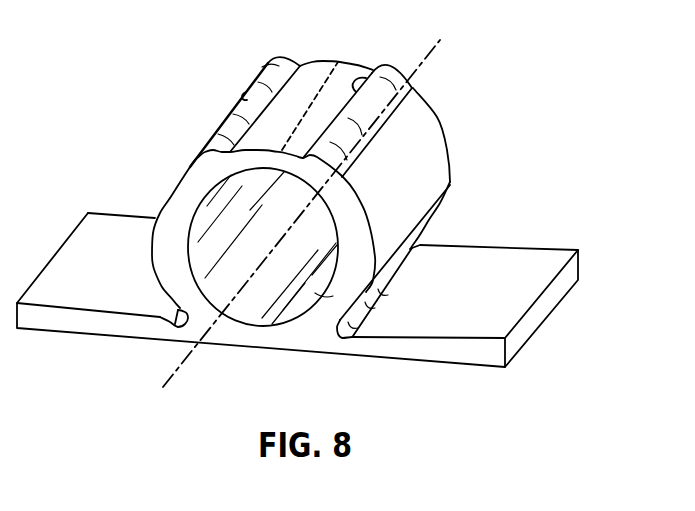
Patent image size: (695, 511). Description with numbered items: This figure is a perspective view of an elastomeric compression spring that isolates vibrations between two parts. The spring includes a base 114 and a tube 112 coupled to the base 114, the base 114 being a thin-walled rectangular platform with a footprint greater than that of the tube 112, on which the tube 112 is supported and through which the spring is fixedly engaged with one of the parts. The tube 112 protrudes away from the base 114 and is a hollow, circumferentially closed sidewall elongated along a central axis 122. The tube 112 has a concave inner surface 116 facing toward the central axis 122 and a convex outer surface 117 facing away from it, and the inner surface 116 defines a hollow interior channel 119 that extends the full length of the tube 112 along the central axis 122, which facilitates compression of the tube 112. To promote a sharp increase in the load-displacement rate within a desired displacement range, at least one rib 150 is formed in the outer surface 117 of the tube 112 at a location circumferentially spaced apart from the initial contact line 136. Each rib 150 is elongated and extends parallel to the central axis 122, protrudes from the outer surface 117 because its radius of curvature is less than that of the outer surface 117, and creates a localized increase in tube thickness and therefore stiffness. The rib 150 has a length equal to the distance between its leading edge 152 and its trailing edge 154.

The tube 112 is at (358, 60).
The base 114 is at (561, 241).
The inner surface 116 is at (333, 296).
The outer surface 117 is at (380, 230).
The hollow interior channel 119 is at (258, 304).
The central axis 122 is at (436, 49).
The initial contact line 136 is at (312, 92).
The rib 150 is at (258, 116).
The leading edge 152 is at (249, 96).
The trailing edge 154 is at (189, 165).